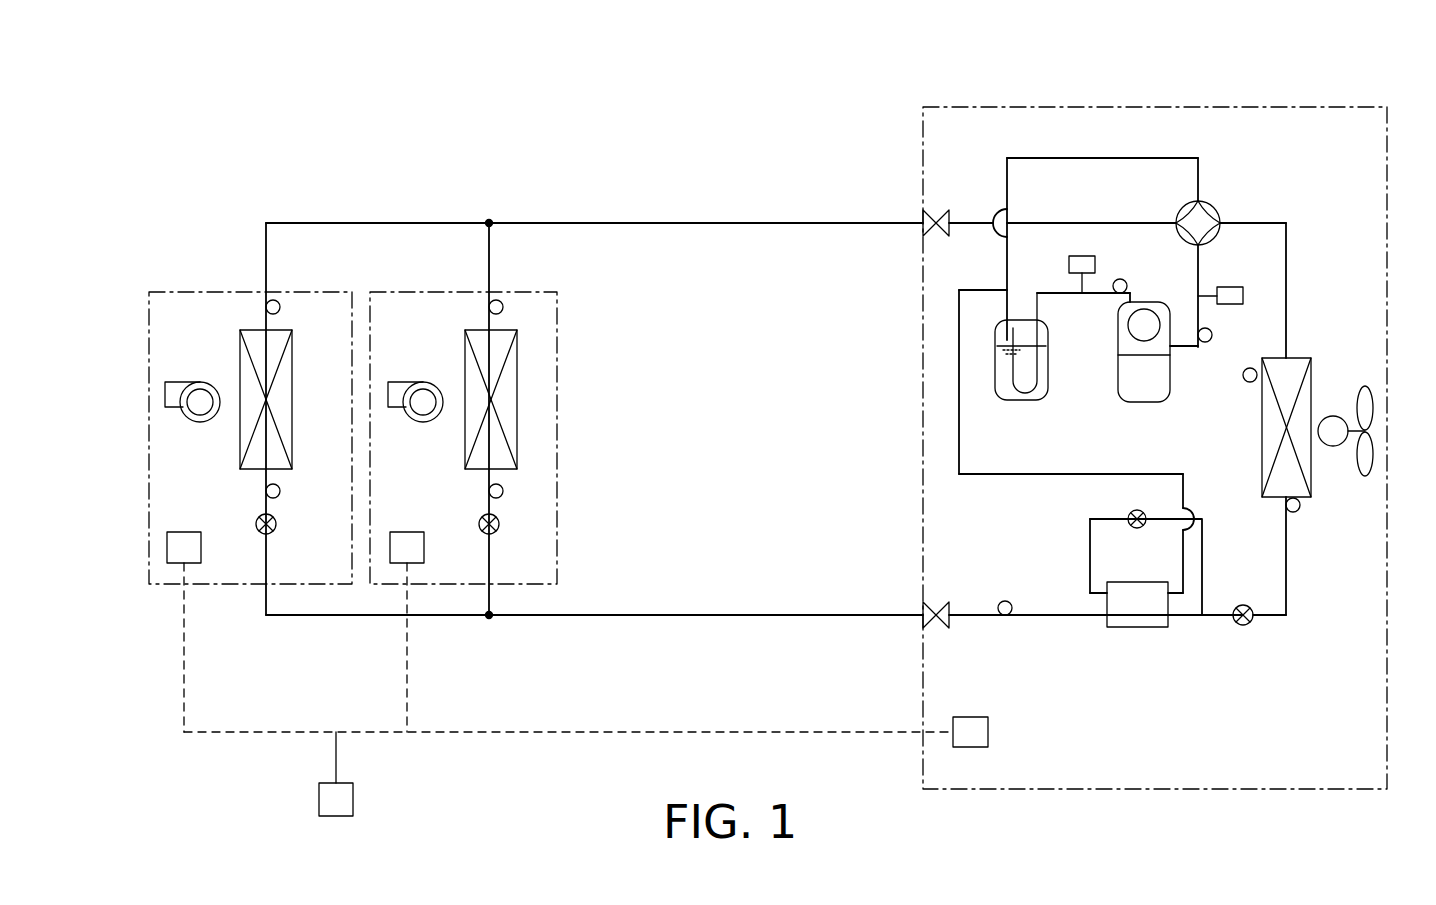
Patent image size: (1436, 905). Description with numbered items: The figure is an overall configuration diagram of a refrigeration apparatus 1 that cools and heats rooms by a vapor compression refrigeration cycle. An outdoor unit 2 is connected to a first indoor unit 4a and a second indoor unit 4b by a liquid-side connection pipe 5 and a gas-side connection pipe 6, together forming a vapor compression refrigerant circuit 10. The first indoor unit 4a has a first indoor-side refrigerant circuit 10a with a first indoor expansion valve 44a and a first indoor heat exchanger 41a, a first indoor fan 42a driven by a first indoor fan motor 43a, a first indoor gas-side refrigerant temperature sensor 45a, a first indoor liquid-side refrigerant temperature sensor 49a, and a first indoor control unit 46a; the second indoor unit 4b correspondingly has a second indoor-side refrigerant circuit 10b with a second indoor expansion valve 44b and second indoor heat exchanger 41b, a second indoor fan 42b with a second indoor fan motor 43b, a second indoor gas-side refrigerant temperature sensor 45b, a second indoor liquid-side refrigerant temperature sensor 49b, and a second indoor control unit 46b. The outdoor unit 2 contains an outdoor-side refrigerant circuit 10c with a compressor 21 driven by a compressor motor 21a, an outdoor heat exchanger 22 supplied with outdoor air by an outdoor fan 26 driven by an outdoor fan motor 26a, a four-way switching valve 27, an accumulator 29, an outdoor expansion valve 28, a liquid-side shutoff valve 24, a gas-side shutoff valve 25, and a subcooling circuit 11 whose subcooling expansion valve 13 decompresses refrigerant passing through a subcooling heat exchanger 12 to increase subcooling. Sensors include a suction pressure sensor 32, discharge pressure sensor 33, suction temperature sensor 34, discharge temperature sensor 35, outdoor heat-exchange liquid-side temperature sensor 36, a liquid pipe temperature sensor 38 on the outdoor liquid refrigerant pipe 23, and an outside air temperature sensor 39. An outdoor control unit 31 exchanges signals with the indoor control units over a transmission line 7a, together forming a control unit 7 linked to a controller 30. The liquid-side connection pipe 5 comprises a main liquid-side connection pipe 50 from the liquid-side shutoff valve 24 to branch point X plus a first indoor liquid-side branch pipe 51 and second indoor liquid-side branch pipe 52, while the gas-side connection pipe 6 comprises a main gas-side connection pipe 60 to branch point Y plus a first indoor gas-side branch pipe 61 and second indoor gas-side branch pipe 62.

The refrigeration apparatus 1 is at (1370, 104).
The outdoor unit 2 is at (1330, 106).
The first indoor unit 4a is at (300, 288).
The second indoor unit 4b is at (523, 288).
The liquid-side connection pipe 5 is at (630, 625).
The gas-side connection pipe 6 is at (616, 216).
The control unit 7 is at (424, 748).
The transmission line 7a is at (513, 734).
The refrigerant circuit 10 is at (762, 195).
The first indoor-side refrigerant circuit 10a is at (220, 318).
The second indoor-side refrigerant circuit 10b is at (444, 318).
The outdoor-side refrigerant circuit 10c is at (1307, 212).
The subcooling circuit 11 is at (1078, 526).
The subcooling heat exchanger 12 is at (1137, 627).
The subcooling expansion valve 13 is at (1137, 528).
The compressor 21 is at (1118, 406).
The compressor motor 21a is at (1132, 337).
The outdoor heat exchanger 22 is at (1262, 428).
The outdoor liquid refrigerant pipe 23 is at (1035, 618).
The liquid-side shutoff valve 24 is at (936, 602).
The gas-side shutoff valve 25 is at (936, 210).
The outdoor fan 26 is at (1347, 372).
The outdoor fan motor 26a is at (1333, 447).
The four-way switching valve 27 is at (1218, 212).
The outdoor expansion valve 28 is at (1243, 626).
The accumulator 29 is at (1021, 401).
The controller 30 is at (319, 798).
The outdoor control unit 31 is at (970, 716).
The suction pressure sensor 32 is at (1069, 263).
The discharge pressure sensor 33 is at (1230, 287).
The suction temperature sensor 34 is at (1120, 279).
The discharge temperature sensor 35 is at (1205, 342).
The outdoor heat-exchange liquid-side temperature sensor 36 is at (1296, 512).
The liquid pipe temperature sensor 38 is at (1005, 600).
The outside air temperature sensor 39 is at (1250, 368).
The first indoor heat exchanger 41a is at (240, 437).
The second indoor heat exchanger 41b is at (465, 437).
The first indoor fan 42a is at (192, 365).
The second indoor fan 42b is at (415, 365).
The first indoor fan motor 43a is at (189, 421).
The second indoor fan motor 43b is at (412, 421).
The first indoor expansion valve 44a is at (258, 531).
The second indoor expansion valve 44b is at (481, 531).
The first indoor gas-side refrigerant temperature sensor 45a is at (318, 318).
The second indoor gas-side refrigerant temperature sensor 45b is at (503, 307).
The first indoor control unit 46a is at (184, 532).
The second indoor control unit 46b is at (407, 532).
The first indoor liquid-side refrigerant temperature sensor 49a is at (280, 491).
The second indoor liquid-side refrigerant temperature sensor 49b is at (503, 491).
The main liquid-side connection pipe 50 is at (720, 617).
The first indoor liquid-side branch pipe 51 is at (266, 603).
The second indoor liquid-side branch pipe 52 is at (489, 603).
The main gas-side connection pipe 60 is at (733, 220).
The first indoor gas-side branch pipe 61 is at (266, 228).
The second indoor gas-side branch pipe 62 is at (487, 243).